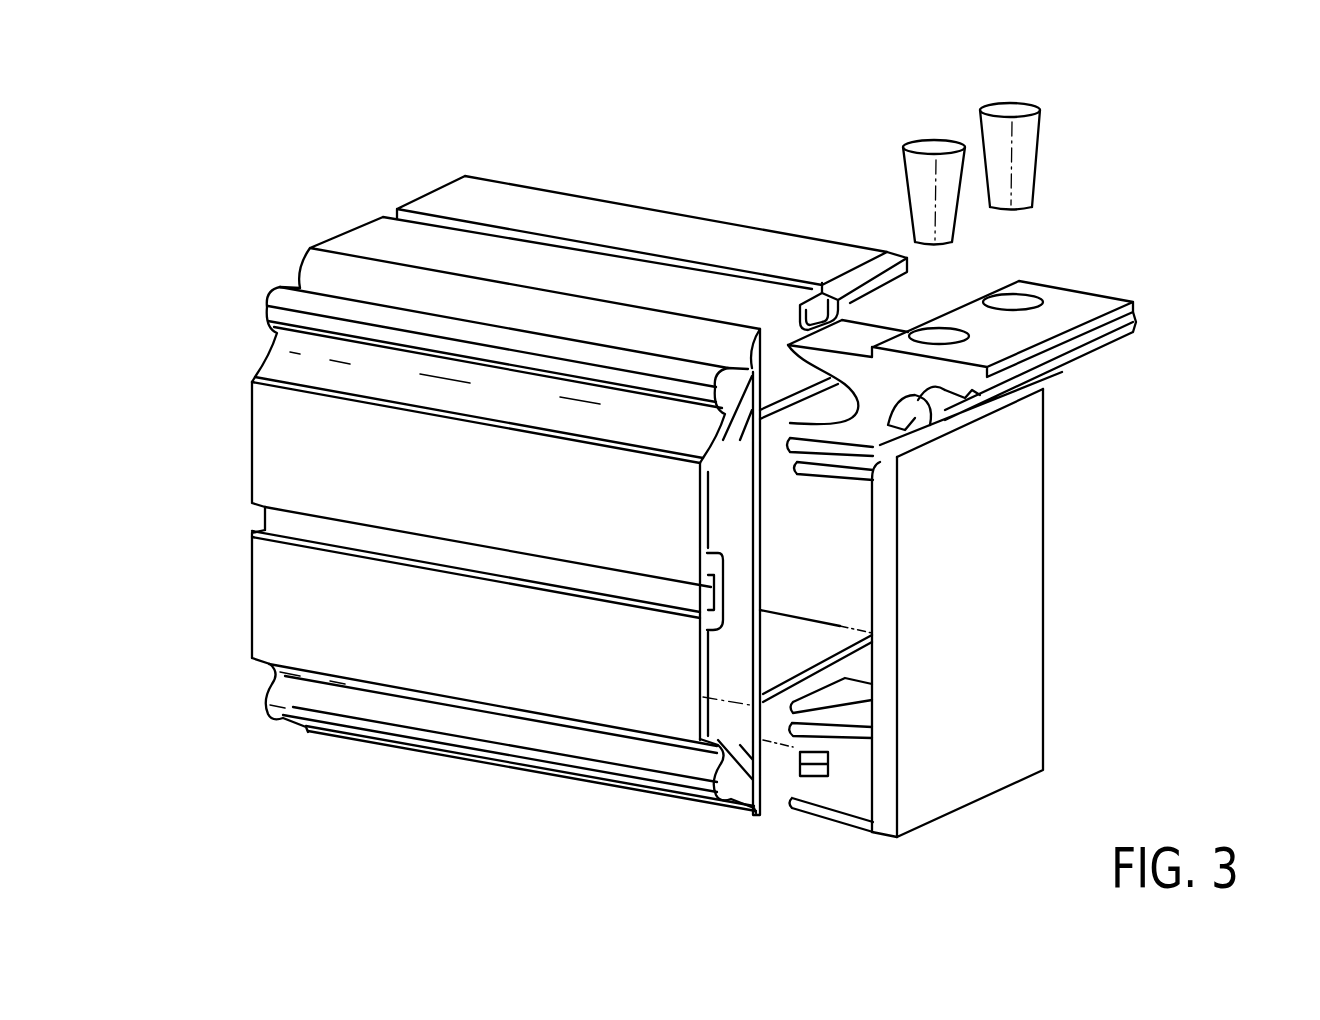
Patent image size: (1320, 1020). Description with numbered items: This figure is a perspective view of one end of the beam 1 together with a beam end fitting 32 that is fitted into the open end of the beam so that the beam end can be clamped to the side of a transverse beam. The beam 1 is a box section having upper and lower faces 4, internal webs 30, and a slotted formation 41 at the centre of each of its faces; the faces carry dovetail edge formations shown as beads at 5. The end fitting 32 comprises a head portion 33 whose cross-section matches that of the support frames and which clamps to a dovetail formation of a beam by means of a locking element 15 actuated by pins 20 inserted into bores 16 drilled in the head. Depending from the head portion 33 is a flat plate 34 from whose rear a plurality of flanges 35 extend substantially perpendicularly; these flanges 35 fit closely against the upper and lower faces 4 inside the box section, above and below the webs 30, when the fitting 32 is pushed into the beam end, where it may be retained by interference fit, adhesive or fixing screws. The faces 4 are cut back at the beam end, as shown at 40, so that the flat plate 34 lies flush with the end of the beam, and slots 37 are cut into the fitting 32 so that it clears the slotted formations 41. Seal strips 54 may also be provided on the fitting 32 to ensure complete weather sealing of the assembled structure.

The beam 1 is at (610, 190).
The upper and lower faces 4 is at (342, 250).
The bead groove 5 is at (258, 303).
The locking element 15 is at (928, 410).
The bores 16 is at (1013, 300).
The pins 20 is at (920, 178).
The webs 30 is at (757, 425).
The beam end fitting 32 is at (1065, 462).
The head portion 33 is at (1072, 282).
The flat plate 34 is at (1020, 598).
The flanges 35 is at (822, 455).
The slots 37 is at (885, 318).
The cut back 40 is at (887, 248).
The slotted formation 41 is at (757, 282).
The seal strips 54 is at (1138, 323).